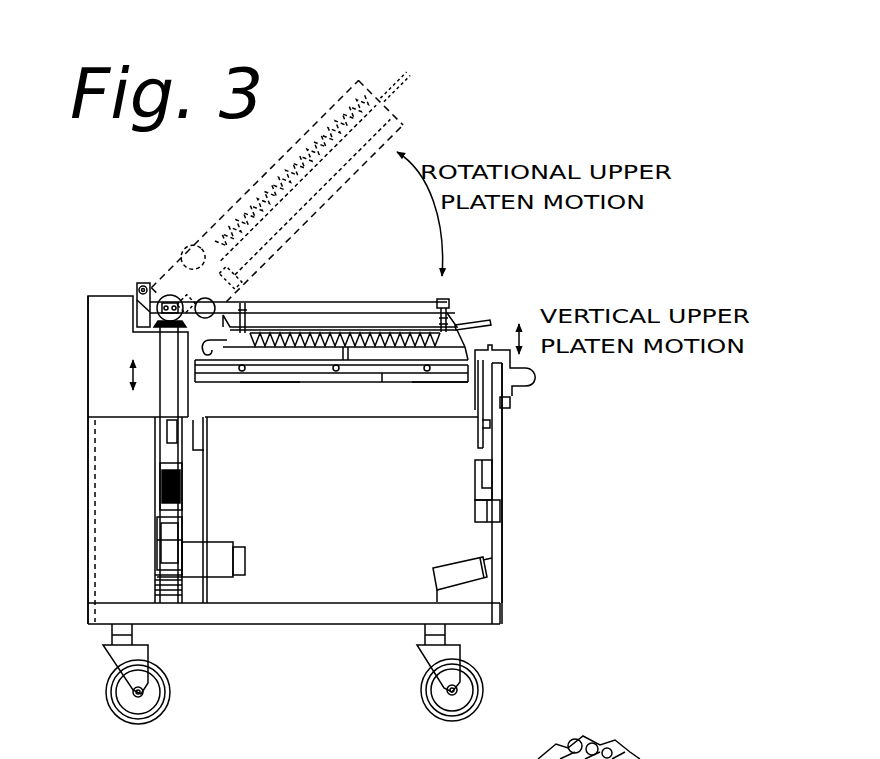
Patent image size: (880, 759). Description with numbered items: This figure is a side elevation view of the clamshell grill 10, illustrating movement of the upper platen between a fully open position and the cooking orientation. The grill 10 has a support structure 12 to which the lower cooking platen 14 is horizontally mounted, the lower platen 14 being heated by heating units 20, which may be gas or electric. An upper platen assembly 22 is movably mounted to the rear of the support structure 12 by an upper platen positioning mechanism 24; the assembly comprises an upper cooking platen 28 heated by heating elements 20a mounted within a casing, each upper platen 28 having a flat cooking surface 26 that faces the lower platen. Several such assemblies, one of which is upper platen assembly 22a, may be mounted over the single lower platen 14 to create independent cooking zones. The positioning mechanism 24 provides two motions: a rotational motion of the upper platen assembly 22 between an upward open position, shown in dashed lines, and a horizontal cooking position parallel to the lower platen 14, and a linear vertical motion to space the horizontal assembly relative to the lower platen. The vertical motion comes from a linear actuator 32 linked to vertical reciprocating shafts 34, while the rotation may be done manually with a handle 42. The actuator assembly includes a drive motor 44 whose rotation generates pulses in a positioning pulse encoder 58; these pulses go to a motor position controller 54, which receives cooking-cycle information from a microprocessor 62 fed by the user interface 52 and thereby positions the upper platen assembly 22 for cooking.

The clamshell grill 10 is at (280, 124).
The support structure 12 is at (343, 630).
The lower cooking platen 14 is at (318, 368).
The heating units 20 is at (247, 384).
The heating elements 20a is at (353, 96).
The upper platen assembly 22 is at (238, 193).
The upper platen assembly 22a is at (531, 740).
The upper platen positioning mechanism 24 is at (116, 550).
The cooking surface 26 is at (223, 358).
The upper cooking platen 28 is at (410, 113).
The linear actuator 32 is at (163, 480).
The vertical reciprocating shafts 34 is at (165, 394).
The handle 42 is at (403, 70).
The drive motor 44 is at (225, 578).
The user interface 52 is at (492, 477).
The motor position controller 54 is at (462, 582).
The positioning pulse encoder 58 is at (244, 556).
The microprocessor 62 is at (473, 502).